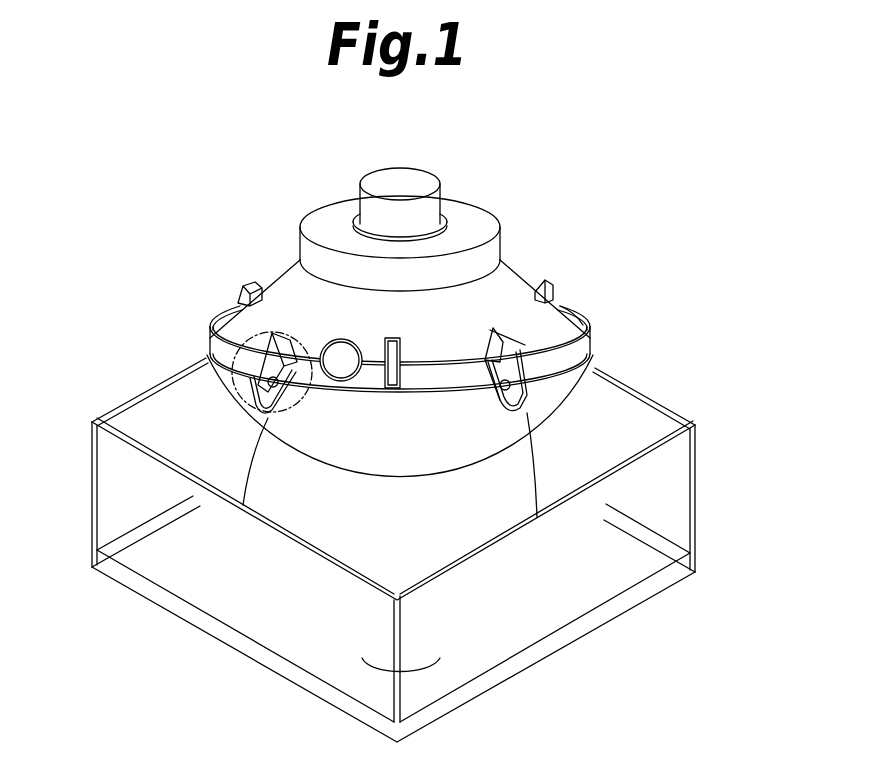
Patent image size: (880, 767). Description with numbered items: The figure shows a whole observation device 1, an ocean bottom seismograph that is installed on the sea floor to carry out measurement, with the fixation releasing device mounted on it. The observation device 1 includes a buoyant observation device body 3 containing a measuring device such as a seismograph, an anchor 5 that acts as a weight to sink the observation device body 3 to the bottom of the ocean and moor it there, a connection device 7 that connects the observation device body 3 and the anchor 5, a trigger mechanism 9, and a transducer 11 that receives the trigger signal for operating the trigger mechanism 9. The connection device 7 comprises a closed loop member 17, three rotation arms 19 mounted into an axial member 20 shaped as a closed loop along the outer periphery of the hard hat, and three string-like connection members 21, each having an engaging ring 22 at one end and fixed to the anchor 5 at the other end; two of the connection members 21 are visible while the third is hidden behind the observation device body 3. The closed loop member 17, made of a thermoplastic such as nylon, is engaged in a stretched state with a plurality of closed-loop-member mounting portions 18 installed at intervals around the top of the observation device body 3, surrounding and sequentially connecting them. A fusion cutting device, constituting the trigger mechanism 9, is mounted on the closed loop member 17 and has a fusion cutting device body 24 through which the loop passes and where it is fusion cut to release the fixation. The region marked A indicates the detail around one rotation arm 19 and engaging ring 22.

The observation device 1 is at (553, 181).
The observation device body 3 is at (192, 370).
The anchor 5 is at (690, 563).
The connection device 7 is at (675, 278).
The trigger mechanism 9 is at (322, 337).
The transducer 11 is at (436, 176).
The closed loop member 17 is at (567, 302).
The closed-loop-member mounting portions 18 is at (240, 281).
The rotation arms 19 is at (262, 310).
The axial member 20 is at (206, 335).
The connection members 21 is at (252, 420).
The engaging ring 22 is at (268, 420).
The fusion cutting device body 24 is at (354, 380).
The detail region A is at (288, 414).